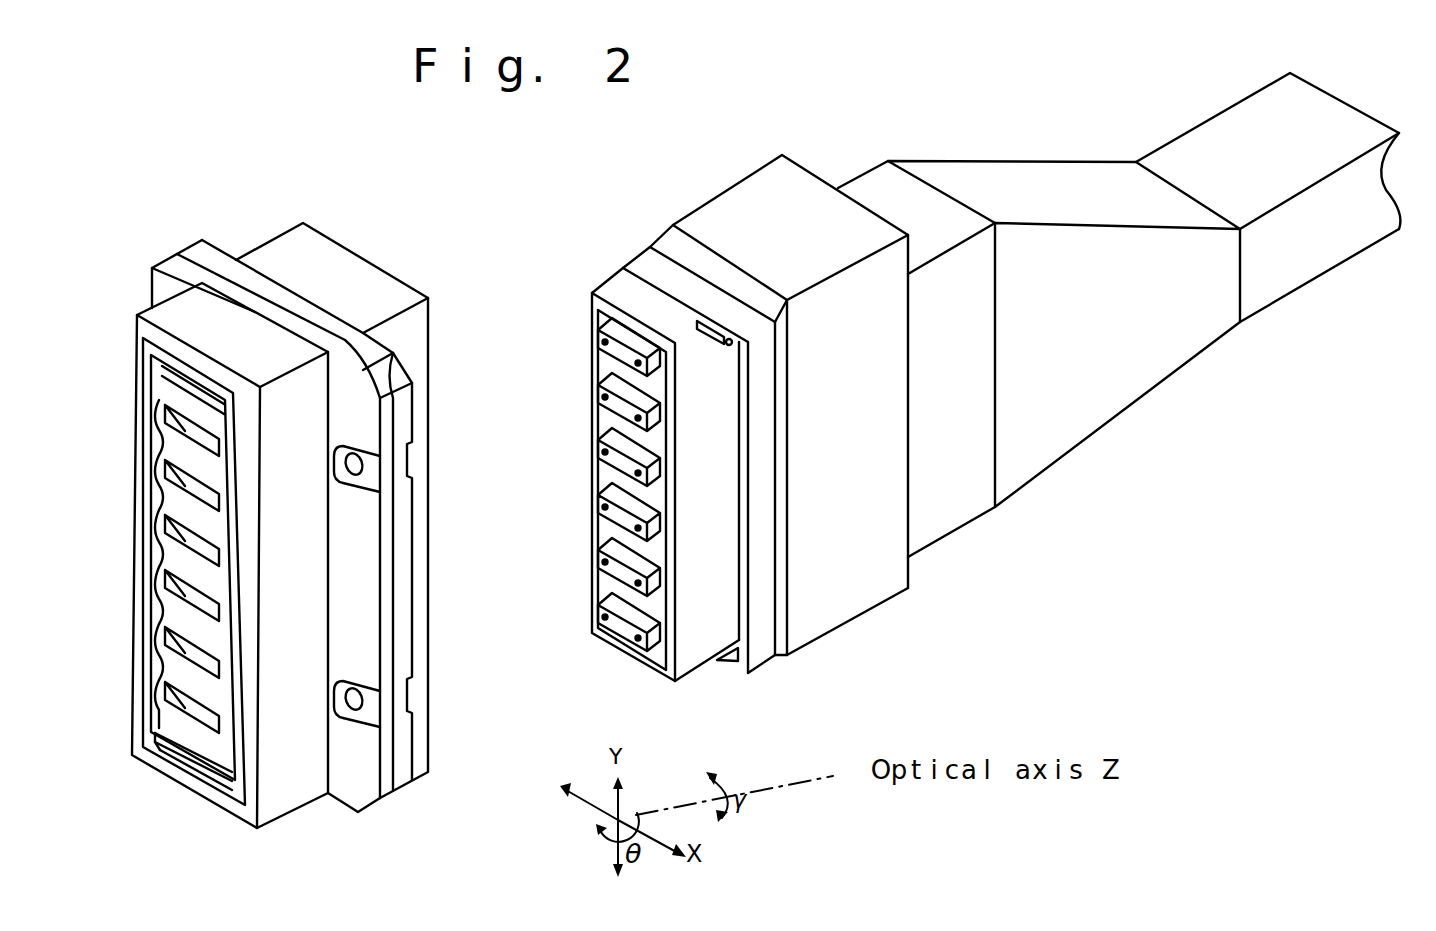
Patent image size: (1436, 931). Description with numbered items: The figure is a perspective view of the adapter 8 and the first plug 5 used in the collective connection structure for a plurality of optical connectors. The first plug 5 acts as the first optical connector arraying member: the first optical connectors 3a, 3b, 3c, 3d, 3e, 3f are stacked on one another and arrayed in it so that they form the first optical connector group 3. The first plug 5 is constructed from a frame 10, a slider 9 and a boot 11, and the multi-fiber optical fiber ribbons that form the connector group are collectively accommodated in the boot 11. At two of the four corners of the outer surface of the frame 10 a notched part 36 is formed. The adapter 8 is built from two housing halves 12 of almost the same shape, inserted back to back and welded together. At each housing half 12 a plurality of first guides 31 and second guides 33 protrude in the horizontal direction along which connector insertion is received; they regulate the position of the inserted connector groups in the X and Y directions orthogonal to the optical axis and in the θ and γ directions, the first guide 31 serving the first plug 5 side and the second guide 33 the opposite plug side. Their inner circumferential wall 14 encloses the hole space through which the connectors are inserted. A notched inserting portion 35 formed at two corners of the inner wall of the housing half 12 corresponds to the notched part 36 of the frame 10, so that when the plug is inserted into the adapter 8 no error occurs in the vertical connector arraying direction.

The first optical connector group 3 is at (660, 670).
The first optical connector 3a is at (598, 339).
The first optical connector 3b is at (598, 396).
The first optical connector 3c is at (598, 452).
The first optical connector 3d is at (598, 509).
The first optical connector 3e is at (598, 566).
The first optical connector 3f is at (598, 622).
The first plug 5 is at (803, 153).
The adapter 8 is at (205, 216).
The slider 9 is at (757, 226).
The frame 10 is at (592, 302).
The boot 11 is at (1037, 170).
The housing half 12 is at (176, 310).
The inner circumferential wall 14 is at (180, 425).
The first guide 31 is at (345, 270).
The second guide 33 is at (143, 340).
The notched inserting portion 35 is at (227, 407).
The notched part 36 is at (682, 360).